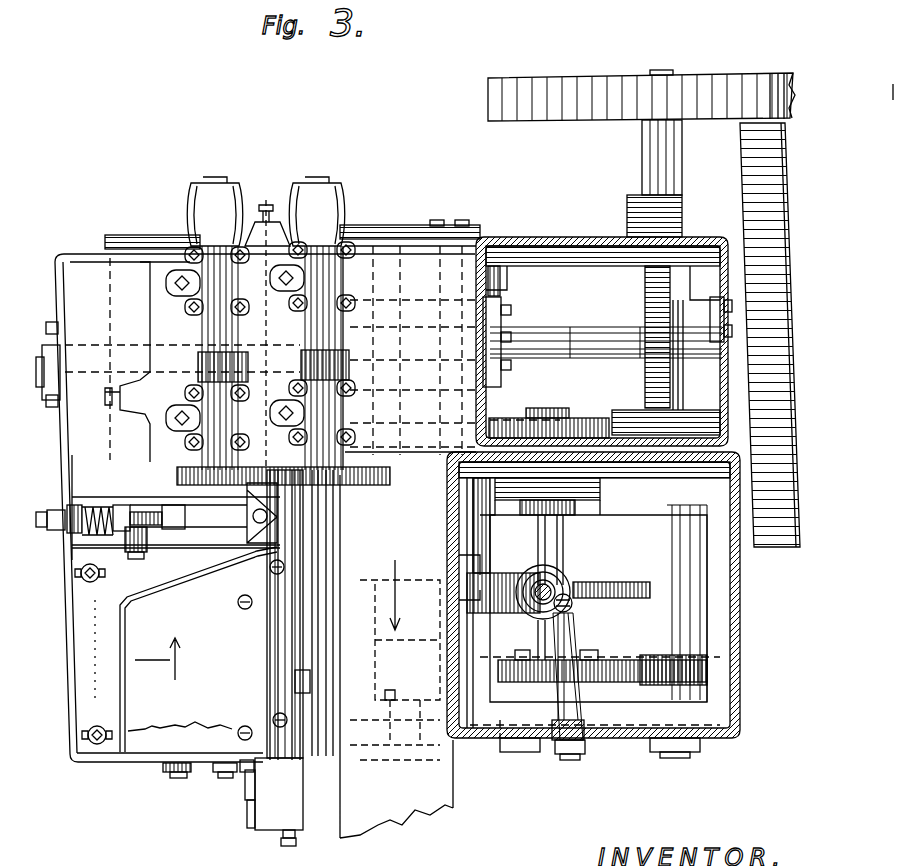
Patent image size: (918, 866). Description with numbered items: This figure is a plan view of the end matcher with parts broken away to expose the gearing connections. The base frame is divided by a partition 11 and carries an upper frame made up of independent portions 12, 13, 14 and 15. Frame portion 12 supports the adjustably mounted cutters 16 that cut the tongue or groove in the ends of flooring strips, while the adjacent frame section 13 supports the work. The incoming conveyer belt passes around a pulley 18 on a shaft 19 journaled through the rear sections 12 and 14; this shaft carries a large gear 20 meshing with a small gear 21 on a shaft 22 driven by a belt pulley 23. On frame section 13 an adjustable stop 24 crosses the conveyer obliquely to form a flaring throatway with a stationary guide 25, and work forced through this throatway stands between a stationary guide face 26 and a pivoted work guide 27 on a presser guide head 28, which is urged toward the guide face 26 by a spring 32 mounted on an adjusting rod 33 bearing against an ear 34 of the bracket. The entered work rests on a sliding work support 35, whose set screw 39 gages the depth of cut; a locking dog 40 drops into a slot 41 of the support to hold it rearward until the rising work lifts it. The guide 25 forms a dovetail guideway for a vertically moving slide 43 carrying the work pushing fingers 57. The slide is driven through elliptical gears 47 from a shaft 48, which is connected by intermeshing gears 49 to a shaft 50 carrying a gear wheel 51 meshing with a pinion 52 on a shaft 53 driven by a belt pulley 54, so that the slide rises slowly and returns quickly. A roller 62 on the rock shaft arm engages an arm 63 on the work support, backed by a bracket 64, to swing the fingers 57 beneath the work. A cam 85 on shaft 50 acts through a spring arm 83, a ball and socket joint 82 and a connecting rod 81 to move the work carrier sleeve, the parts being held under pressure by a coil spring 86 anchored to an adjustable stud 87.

The partition 11 is at (155, 714).
The frame portion 12 is at (76, 258).
The frame section 13 is at (138, 756).
The frame portion 14 is at (566, 240).
The frame portion 15 is at (740, 628).
The cutters 16 is at (185, 460).
The pulley 18 is at (131, 235).
The shaft 19 is at (474, 422).
The large gear 20 is at (645, 290).
The small gear 21 is at (650, 365).
The shaft 22 is at (540, 335).
The belt pulley 23 is at (778, 547).
The adjustable stop 24 is at (148, 597).
The stationary guide 25 is at (310, 600).
The stationary guide face 26 is at (343, 490).
The pivoted work guide 27 is at (262, 478).
The presser guide head 28 is at (200, 512).
The spring 32 is at (76, 545).
The adjusting rod 33 is at (135, 512).
The ear 34 is at (100, 514).
The work support 35 is at (292, 797).
The set screw 39 is at (297, 842).
The locking dog 40 is at (172, 550).
The slot or recess 41 is at (345, 572).
The vertical moving slide 43 is at (295, 602).
The elliptical gears 47 is at (372, 232).
The shaft 48 is at (410, 350).
The intermeshing gears 49 is at (502, 430).
The shaft 50 is at (562, 540).
The gear wheel 51 is at (612, 660).
The pinion 52 is at (664, 658).
The shaft 53 is at (663, 603).
The belt pulley 54 is at (612, 105).
The finger 57 is at (305, 508).
The roller 62 is at (274, 794).
The arm 63 is at (250, 814).
The bracket 64 is at (245, 780).
The connecting rod 81 is at (560, 578).
The ball and socket joint 82 is at (536, 574).
The spring arm 83 is at (470, 585).
The cam 85 is at (640, 584).
The coil spring 86 is at (572, 608).
The stud 87 is at (578, 752).